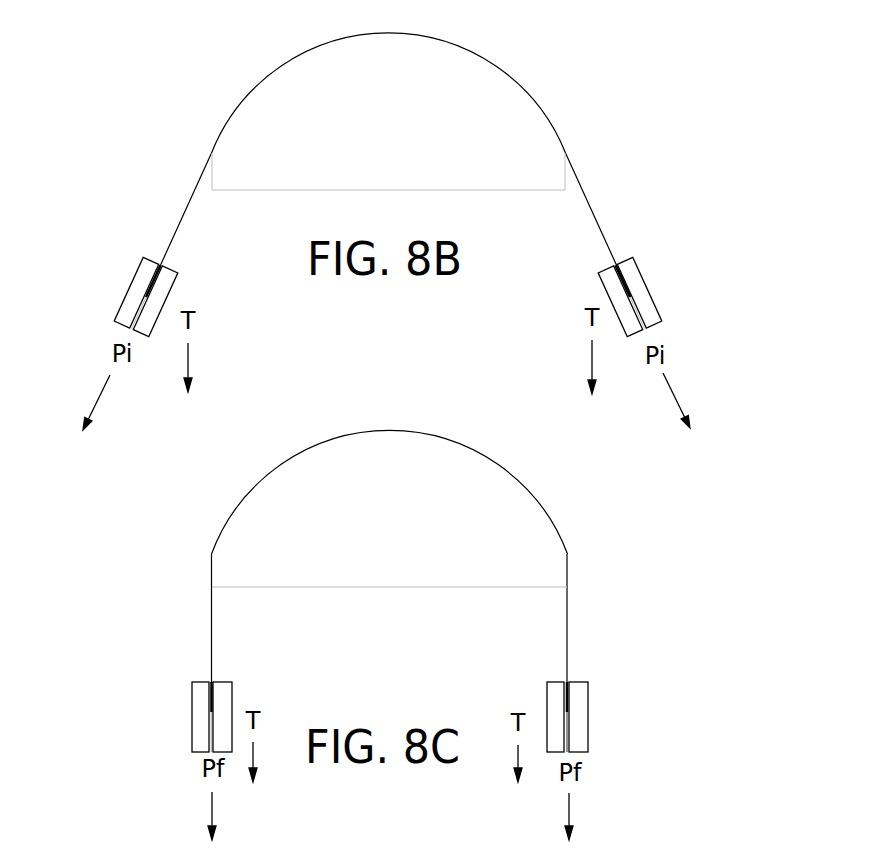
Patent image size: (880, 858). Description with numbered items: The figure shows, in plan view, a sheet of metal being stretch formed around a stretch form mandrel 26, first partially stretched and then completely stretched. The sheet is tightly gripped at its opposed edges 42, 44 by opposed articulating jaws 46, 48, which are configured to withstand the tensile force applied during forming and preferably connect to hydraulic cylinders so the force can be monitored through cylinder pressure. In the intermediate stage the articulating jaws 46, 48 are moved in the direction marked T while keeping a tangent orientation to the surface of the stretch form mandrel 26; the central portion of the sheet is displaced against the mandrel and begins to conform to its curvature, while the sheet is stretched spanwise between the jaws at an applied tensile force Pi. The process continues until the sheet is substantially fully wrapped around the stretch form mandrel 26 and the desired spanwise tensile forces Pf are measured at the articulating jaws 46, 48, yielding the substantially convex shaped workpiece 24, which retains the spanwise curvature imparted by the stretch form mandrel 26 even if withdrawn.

In FIG. 8C, the substantially convex shaped workpiece 24 is at (463, 448).
In FIG. 8B, the stretch form mandrel 26 is at (322, 170).
In FIG. 8C, the stretch form mandrel 26 is at (318, 578).
In FIG. 8B, the opposed edge 42 is at (148, 292).
In FIG. 8C, the opposed edge 42 is at (214, 710).
In FIG. 8B, the opposed edge 44 is at (627, 292).
In FIG. 8C, the opposed edge 44 is at (567, 710).
In FIG. 8B, the articulating jaw 46 is at (130, 290).
In FIG. 8C, the articulating jaw 46 is at (193, 727).
In FIG. 8B, the articulating jaw 48 is at (650, 293).
In FIG. 8C, the articulating jaw 48 is at (587, 727).